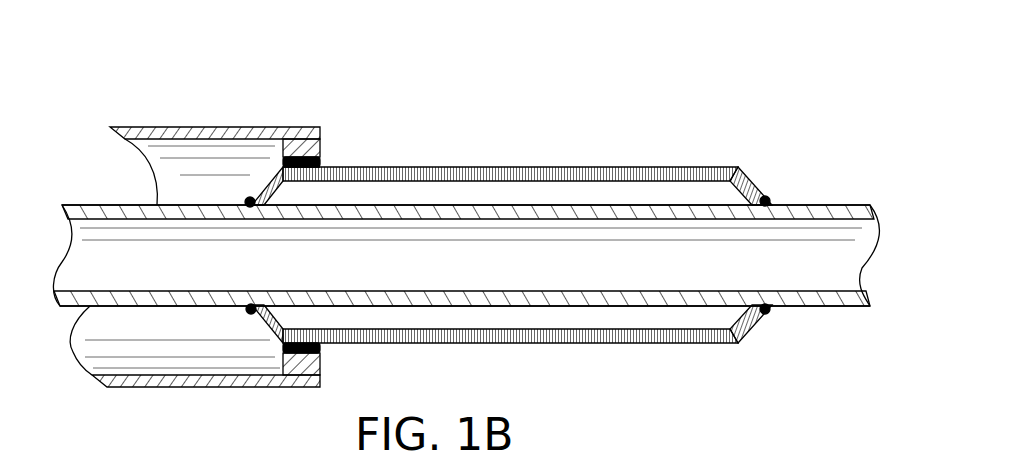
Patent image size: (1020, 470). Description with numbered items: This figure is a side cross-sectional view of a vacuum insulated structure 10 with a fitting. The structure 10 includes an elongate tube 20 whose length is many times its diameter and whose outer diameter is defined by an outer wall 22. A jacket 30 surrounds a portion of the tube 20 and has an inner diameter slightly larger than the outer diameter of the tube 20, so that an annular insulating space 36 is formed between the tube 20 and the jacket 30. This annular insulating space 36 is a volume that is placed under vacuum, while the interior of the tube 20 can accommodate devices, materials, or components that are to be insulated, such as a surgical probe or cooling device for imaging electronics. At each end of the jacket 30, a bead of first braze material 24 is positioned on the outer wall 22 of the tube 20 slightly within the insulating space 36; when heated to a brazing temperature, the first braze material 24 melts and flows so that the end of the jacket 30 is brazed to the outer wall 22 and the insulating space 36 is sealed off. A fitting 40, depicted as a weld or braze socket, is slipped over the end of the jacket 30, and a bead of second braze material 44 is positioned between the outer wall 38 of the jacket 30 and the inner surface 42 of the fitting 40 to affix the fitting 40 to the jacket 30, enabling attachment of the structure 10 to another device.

The structure 10 is at (826, 88).
The tube 20 is at (840, 212).
The outer wall 22 is at (798, 204).
The first braze material 24 is at (248, 202).
The jacket 30 is at (512, 214).
The annular insulating space 36 is at (544, 193).
The outer wall of the jacket 38 is at (472, 167).
The fitting 40 is at (166, 127).
The inner surface of the fitting 42 is at (296, 157).
The second braze material 44 is at (320, 165).